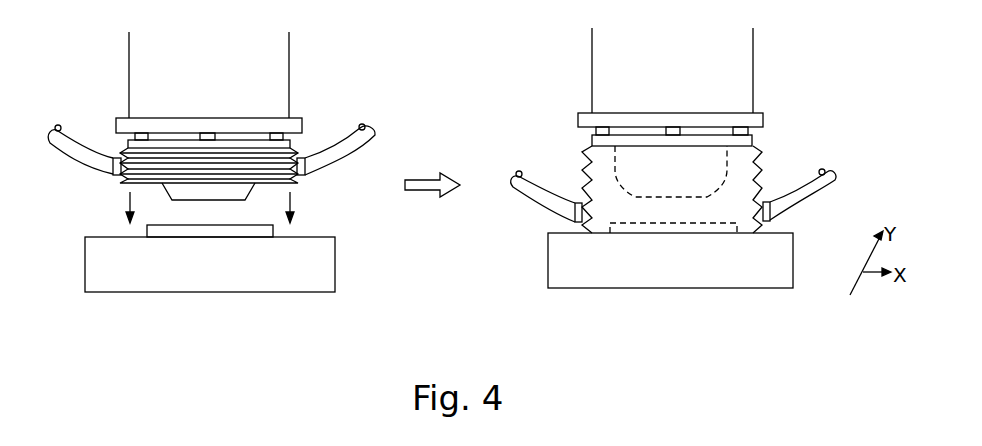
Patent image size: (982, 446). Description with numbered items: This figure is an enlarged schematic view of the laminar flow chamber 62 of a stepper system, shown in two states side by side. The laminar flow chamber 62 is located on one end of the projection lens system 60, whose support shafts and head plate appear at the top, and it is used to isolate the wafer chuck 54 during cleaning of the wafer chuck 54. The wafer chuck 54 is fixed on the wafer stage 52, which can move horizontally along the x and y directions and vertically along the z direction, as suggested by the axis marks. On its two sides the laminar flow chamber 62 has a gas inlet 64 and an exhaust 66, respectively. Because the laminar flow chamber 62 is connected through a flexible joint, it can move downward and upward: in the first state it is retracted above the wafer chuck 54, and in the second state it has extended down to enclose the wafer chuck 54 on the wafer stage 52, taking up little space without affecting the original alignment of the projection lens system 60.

The wafer stage 52 is at (320, 272).
The wafer chuck 54 is at (260, 232).
The projection lens system 60 is at (272, 52).
The laminar flow chamber 62 is at (125, 182).
The gas inlet 64 is at (73, 157).
The exhaust 66 is at (346, 148).